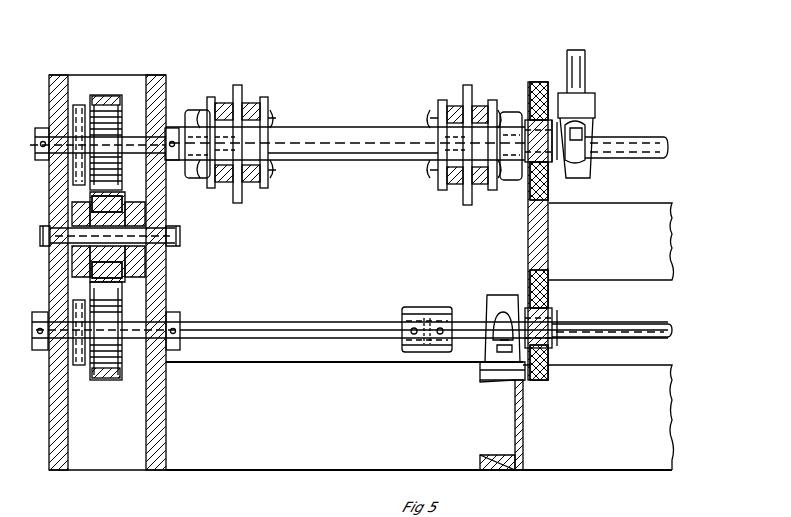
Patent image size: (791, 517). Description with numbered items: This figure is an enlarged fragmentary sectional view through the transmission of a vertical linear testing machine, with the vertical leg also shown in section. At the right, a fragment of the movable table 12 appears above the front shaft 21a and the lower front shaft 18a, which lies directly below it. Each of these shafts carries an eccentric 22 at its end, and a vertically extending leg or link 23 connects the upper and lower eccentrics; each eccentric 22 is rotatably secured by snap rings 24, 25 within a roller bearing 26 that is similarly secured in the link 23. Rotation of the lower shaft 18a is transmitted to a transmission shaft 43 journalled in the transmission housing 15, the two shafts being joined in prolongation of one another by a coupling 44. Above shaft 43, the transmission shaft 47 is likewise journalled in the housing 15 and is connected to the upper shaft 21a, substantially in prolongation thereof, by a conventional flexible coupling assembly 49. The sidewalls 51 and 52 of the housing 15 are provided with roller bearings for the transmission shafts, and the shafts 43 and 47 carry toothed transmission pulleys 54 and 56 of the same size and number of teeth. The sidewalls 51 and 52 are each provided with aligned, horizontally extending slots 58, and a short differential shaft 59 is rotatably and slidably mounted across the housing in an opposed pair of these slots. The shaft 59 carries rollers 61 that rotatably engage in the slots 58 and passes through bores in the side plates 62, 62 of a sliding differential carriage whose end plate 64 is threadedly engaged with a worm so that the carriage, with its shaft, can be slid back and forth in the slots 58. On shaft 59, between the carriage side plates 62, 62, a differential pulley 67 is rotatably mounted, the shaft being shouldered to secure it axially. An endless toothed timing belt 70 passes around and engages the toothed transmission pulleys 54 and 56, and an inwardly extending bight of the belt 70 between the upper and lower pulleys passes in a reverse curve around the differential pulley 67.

The movable table 12 is at (664, 432).
The transmission housing 15 is at (168, 432).
The front shaft 18a is at (672, 328).
The front shaft 21a is at (660, 141).
The eccentric 22 is at (560, 122).
The vertically extending leg or link 23 is at (548, 240).
The snap ring 24 is at (560, 126).
The snap ring 25 is at (528, 116).
The roller bearing 26 is at (530, 179).
The transmission shaft 43 is at (33, 330).
The coupling 44 is at (428, 307).
The transmission shaft 47 is at (34, 144).
The flexible coupling assembly 49 is at (365, 128).
The housing sidewall 51 is at (61, 77).
The housing sidewall 52 is at (158, 78).
The toothed transmission pulley 54 is at (122, 368).
The toothed transmission pulley 56 is at (122, 108).
The slot 58 is at (60, 222).
The differential shaft 59 is at (40, 238).
The roller 61 is at (55, 258).
The carriage side plate 62 is at (65, 280).
The end plate 64 is at (166, 188).
The differential pulley 67 is at (82, 205).
The endless toothed timing belt 70 is at (103, 95).